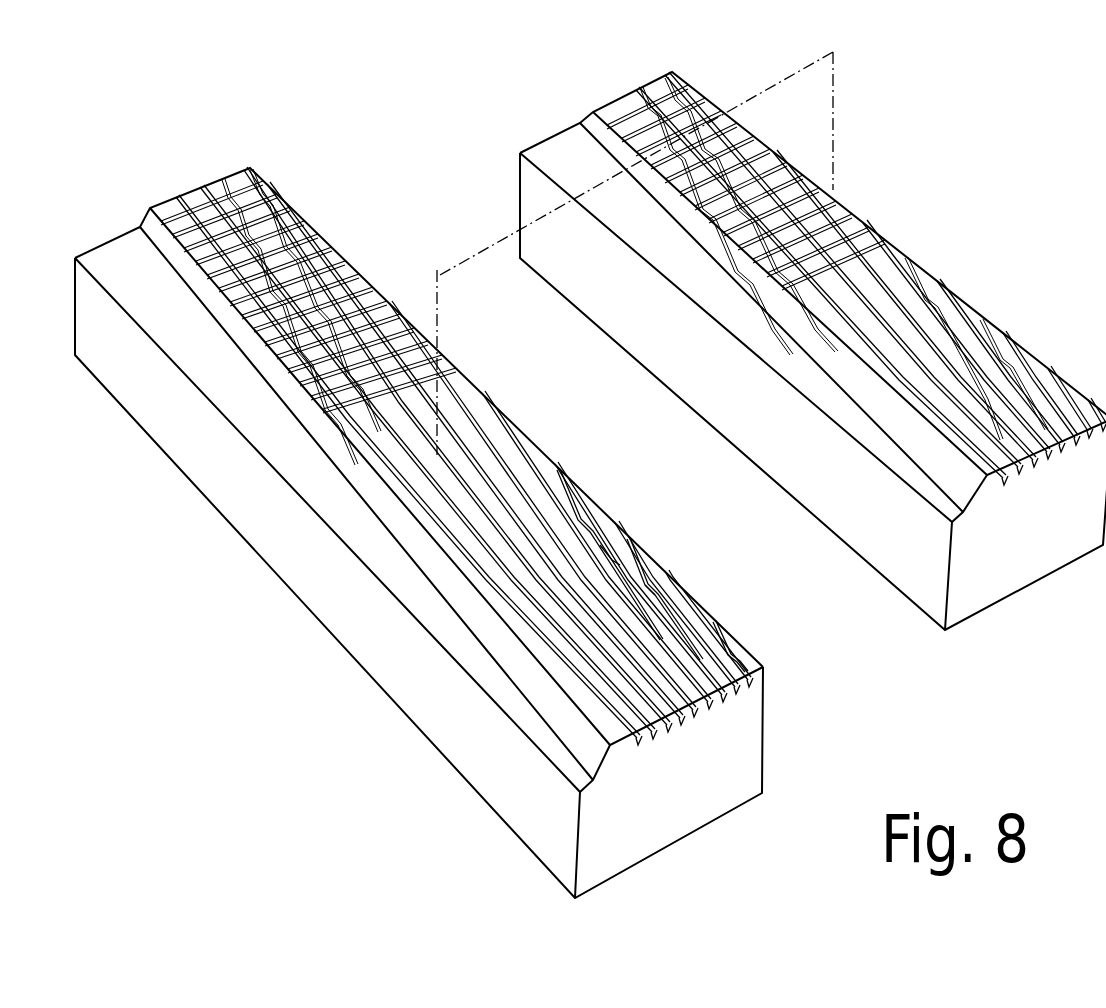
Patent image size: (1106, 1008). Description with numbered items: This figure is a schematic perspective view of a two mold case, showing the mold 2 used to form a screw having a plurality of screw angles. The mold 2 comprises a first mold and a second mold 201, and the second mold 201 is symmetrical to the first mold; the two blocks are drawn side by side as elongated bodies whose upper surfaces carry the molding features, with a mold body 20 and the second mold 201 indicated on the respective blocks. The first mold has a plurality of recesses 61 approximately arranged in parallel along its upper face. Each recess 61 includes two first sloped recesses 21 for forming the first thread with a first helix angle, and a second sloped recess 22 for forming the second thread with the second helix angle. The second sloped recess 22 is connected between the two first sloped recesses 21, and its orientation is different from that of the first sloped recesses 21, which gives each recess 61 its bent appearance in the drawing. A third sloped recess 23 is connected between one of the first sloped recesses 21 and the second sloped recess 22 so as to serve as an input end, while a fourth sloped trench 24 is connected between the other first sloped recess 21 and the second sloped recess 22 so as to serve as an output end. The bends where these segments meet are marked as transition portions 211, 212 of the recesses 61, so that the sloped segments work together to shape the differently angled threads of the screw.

The mold 2 is at (437, 55).
The mold block 20 is at (235, 204).
The second mold 201 is at (572, 173).
The first sloped recesses 21 is at (557, 480).
The second sloped recess 22 is at (645, 625).
The third sloped recess 23 is at (658, 648).
The fourth sloped trench 24 is at (618, 580).
The groove bend 211 is at (655, 640).
The groove bend 212 is at (628, 558).
The recesses 61 is at (665, 720).